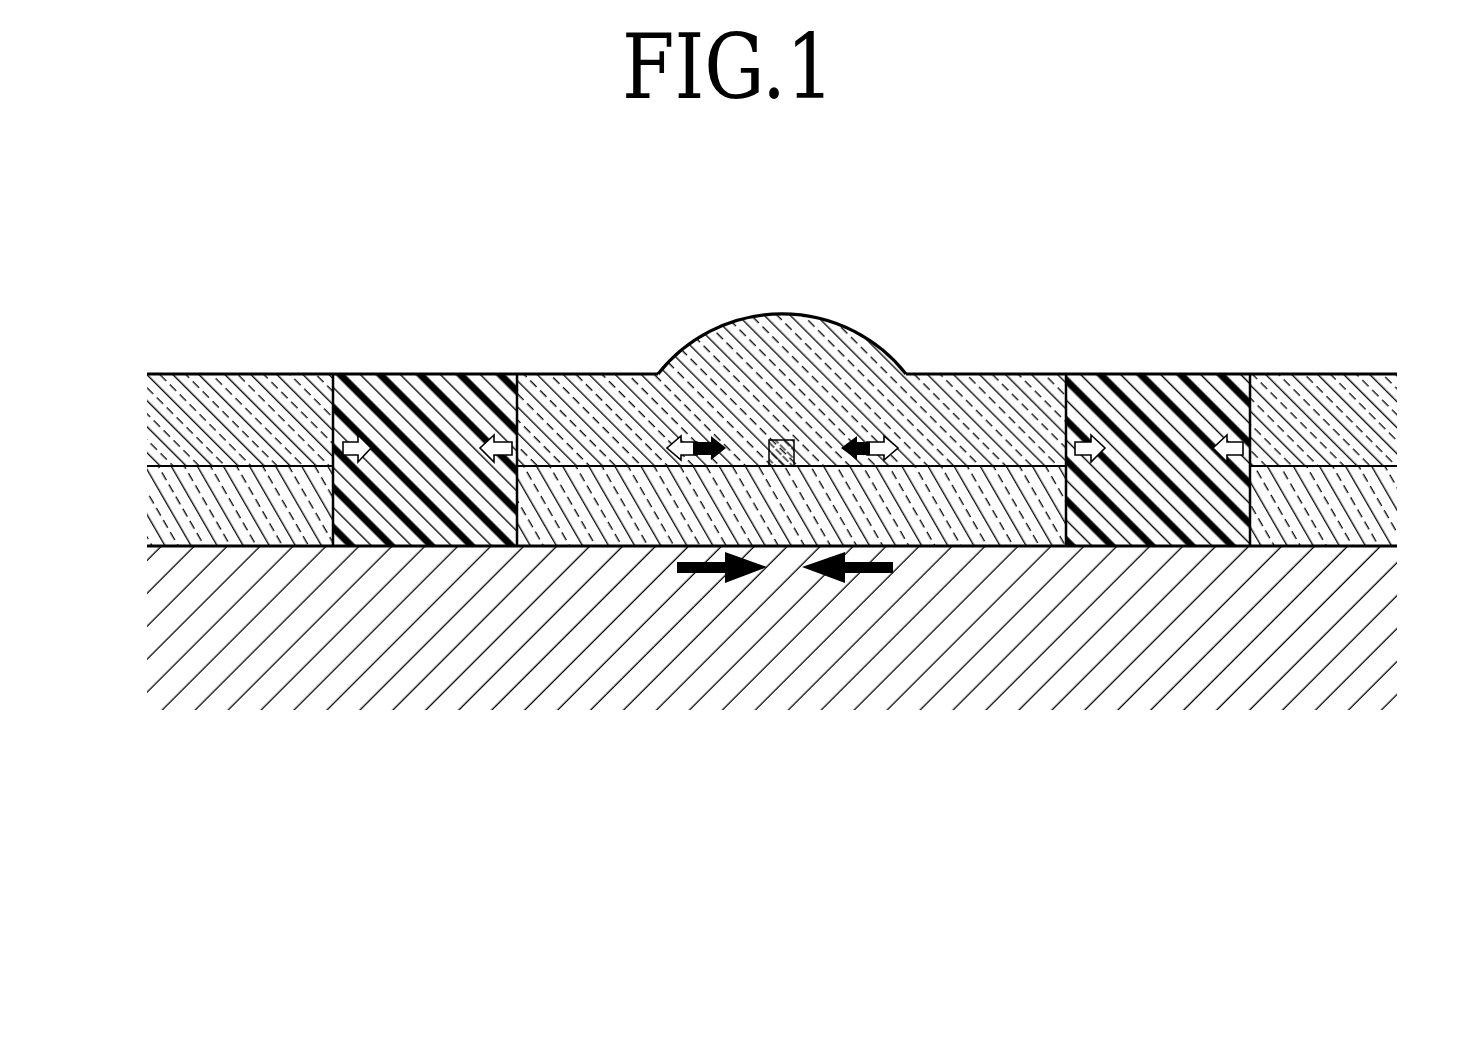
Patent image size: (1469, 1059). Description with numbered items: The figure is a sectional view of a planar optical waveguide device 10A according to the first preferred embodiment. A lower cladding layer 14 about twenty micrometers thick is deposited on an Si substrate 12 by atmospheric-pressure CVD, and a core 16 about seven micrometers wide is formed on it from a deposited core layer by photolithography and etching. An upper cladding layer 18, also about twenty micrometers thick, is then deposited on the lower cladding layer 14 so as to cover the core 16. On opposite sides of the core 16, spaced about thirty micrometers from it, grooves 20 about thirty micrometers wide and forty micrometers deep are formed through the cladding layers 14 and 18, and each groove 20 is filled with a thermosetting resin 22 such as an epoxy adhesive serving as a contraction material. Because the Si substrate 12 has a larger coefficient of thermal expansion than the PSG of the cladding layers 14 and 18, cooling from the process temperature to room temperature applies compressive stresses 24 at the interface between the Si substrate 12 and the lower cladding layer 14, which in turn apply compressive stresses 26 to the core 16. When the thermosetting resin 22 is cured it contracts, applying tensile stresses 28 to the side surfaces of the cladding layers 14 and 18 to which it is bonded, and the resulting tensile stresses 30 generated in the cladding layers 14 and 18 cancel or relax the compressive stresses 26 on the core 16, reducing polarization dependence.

The planar optical waveguide device 10A is at (990, 348).
The Si substrate 12 is at (1055, 672).
The lower cladding layer 14 is at (1368, 503).
The core 16 is at (779, 438).
The upper cladding layer 18 is at (738, 335).
The grooves 20 is at (335, 378).
The thermosetting resin 22 is at (431, 374).
The compressive stresses 24 is at (705, 578).
The compressive stresses 26 is at (712, 436).
The tensile stresses 28 is at (362, 432).
The tensile stresses 30 is at (670, 440).